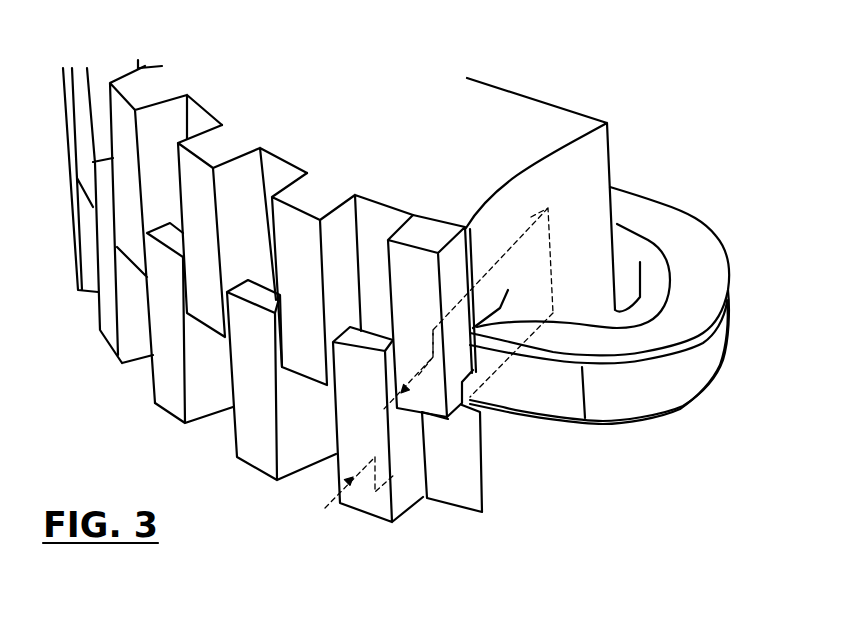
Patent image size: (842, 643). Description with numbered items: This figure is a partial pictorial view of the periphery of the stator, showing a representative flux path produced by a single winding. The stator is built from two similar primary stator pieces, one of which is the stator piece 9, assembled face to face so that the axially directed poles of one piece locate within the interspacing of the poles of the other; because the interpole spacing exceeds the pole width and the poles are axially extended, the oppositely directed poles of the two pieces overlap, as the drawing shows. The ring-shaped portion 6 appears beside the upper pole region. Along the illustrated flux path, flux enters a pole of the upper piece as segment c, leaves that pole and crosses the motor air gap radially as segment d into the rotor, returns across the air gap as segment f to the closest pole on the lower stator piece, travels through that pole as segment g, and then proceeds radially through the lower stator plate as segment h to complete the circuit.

The pole piece 6 is at (531, 217).
The primary stator piece 9 is at (557, 253).
The flux segment c is at (433, 343).
The flux segment d is at (417, 377).
The flux segment f is at (325, 508).
The flux segment g is at (375, 485).
The flux segment h is at (425, 423).